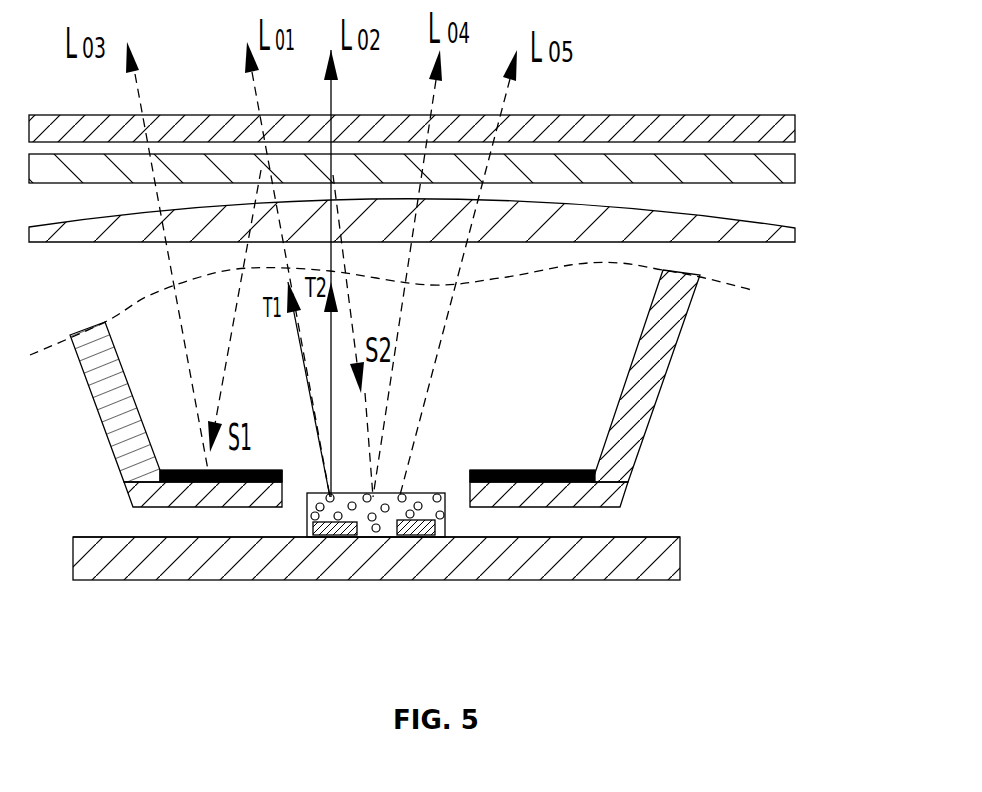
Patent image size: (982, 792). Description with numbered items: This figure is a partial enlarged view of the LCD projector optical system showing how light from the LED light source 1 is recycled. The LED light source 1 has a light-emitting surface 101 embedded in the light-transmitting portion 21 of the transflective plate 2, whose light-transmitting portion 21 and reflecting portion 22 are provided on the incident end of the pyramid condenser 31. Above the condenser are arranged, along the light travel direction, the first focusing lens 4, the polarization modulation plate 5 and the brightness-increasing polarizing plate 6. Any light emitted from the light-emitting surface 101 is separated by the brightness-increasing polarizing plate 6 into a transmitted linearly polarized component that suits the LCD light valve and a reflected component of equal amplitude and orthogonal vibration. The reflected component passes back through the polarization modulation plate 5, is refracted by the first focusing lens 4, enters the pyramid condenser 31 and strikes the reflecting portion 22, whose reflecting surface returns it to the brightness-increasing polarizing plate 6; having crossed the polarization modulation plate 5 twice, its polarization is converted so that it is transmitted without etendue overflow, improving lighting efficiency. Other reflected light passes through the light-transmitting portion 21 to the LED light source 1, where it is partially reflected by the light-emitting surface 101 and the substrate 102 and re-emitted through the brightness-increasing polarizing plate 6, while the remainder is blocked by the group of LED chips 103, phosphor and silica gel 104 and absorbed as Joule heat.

The LED light source 1 is at (670, 560).
The transflective plate 2 is at (485, 435).
The first focusing lens 4 is at (757, 230).
The polarization modulation plate 5 is at (703, 163).
The brightness-increasing polarizing plate 6 is at (611, 123).
The light-transmitting portion 21 is at (456, 475).
The reflecting portion 22 is at (555, 467).
The pyramid condenser 31 is at (682, 312).
The light-emitting surface 101 is at (433, 493).
The substrate 102 is at (628, 536).
The LED chips 103 is at (413, 533).
The silica gel 104 is at (310, 507).